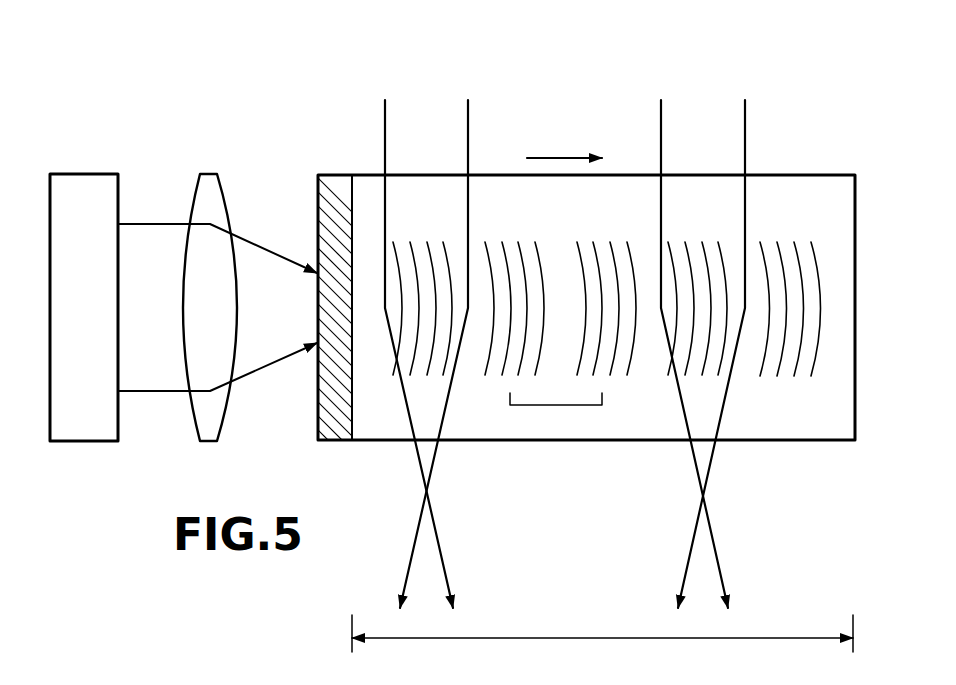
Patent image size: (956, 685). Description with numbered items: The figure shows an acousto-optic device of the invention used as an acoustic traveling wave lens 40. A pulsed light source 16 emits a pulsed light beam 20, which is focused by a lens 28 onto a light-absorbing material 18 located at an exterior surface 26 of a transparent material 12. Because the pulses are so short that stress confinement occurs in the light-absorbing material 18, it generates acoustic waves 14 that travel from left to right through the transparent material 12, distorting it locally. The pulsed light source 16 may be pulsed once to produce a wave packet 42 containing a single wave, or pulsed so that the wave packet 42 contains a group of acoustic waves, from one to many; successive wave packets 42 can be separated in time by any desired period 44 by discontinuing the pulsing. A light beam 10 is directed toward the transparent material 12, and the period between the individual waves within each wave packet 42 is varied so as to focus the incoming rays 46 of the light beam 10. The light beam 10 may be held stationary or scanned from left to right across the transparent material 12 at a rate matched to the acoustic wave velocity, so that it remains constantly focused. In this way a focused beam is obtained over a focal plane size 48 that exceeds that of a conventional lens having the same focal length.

The light beam 10 is at (468, 143).
The transparent material 12 is at (839, 175).
The acoustic waves 14 is at (632, 258).
The pulsed light source 16 is at (96, 320).
The light-absorbing material 18 is at (335, 445).
The pulsed light beam 20 is at (268, 247).
The exterior surface 26 is at (352, 200).
The lens 28 is at (210, 174).
The acoustic traveling wave lens 40 is at (321, 121).
The wave packet 42 is at (543, 258).
The period 44 is at (553, 406).
The incoming rays 46 is at (385, 126).
The focal plane size 48 is at (596, 636).